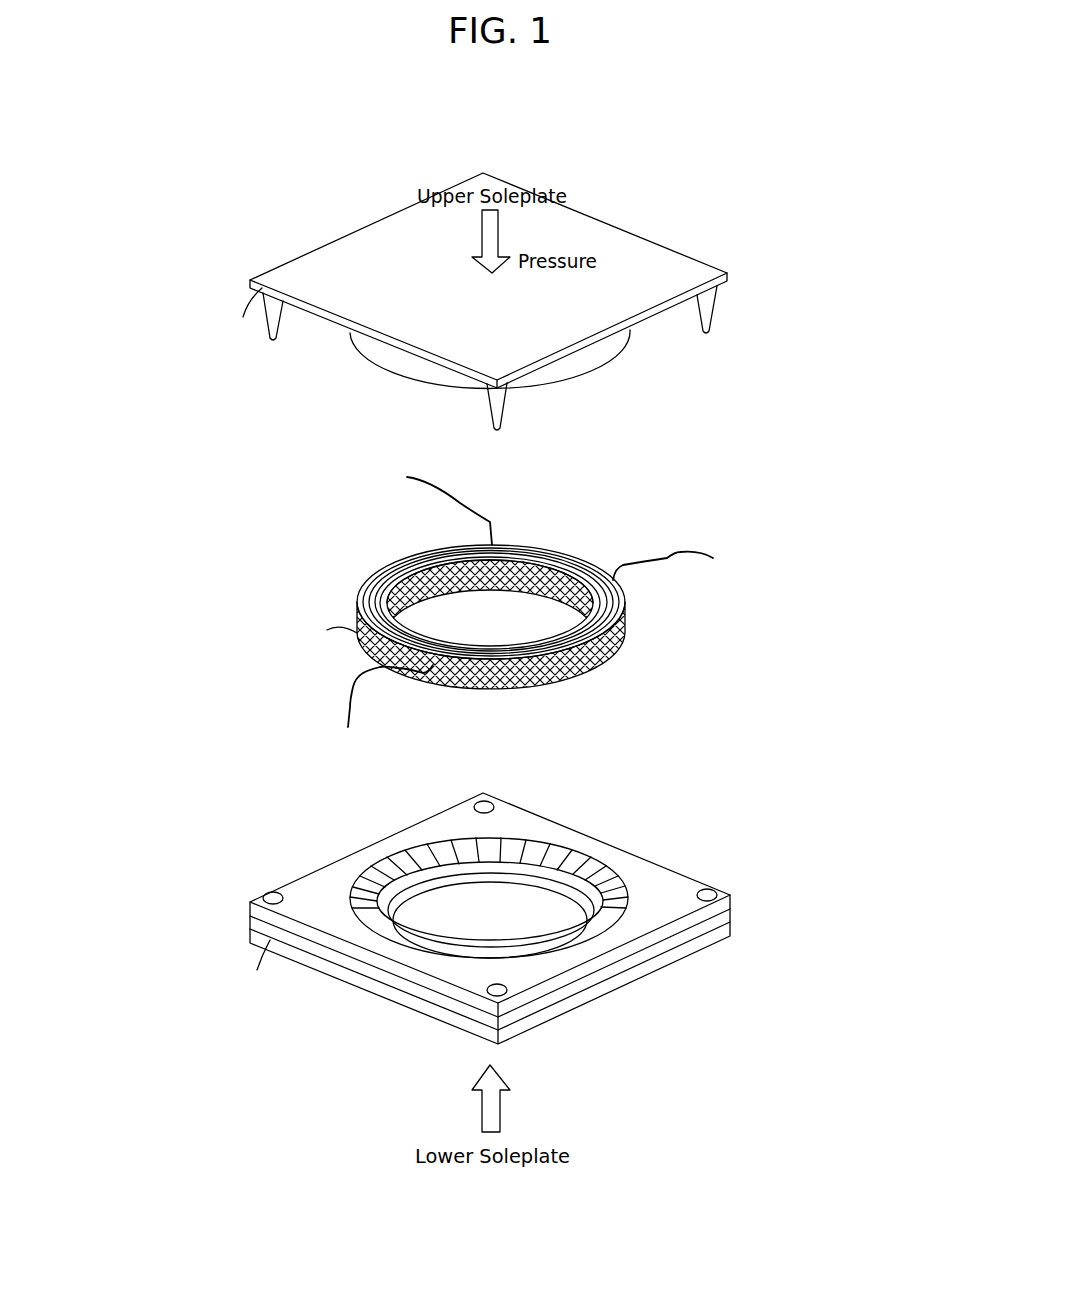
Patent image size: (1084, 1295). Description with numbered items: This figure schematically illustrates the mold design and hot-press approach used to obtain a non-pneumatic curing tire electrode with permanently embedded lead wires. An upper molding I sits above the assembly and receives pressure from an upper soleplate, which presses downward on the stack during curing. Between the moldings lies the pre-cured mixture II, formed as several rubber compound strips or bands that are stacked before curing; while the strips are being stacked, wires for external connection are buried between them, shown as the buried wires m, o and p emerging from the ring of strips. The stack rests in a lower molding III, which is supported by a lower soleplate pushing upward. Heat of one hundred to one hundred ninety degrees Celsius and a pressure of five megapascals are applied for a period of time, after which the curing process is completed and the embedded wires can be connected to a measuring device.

The upper molding I is at (401, 301).
The several rubber compound straps (bands) before curing II is at (336, 617).
The lower molding III is at (409, 918).
The buried wire for external connection m is at (458, 511).
The buried wire for external connection o is at (786, 562).
The buried wire for external connection p is at (389, 692).